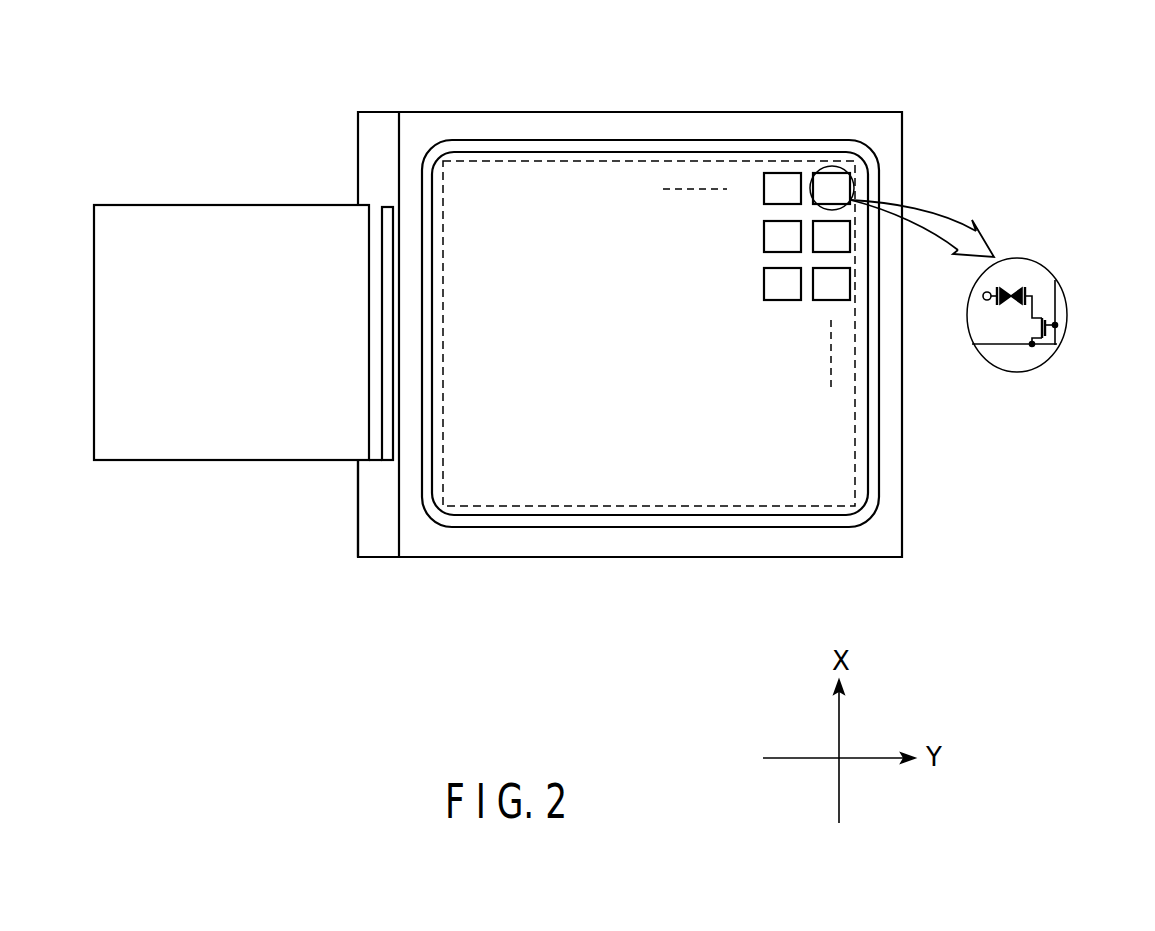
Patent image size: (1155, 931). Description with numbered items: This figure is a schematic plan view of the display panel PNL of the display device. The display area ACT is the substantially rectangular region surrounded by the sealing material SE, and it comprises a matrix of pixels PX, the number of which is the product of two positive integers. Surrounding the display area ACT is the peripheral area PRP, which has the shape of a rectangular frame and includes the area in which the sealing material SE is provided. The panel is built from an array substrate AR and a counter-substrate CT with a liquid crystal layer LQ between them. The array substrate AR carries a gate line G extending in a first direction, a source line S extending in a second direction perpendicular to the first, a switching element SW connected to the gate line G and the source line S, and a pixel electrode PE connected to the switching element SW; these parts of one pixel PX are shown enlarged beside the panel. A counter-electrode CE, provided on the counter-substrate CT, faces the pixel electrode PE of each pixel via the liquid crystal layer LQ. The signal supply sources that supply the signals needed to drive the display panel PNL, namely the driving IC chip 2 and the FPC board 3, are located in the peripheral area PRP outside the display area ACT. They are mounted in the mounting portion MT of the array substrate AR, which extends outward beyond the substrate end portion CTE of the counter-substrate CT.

The display panel PNL is at (347, 96).
The substrate end portion CTE is at (398, 135).
The sealing material SE is at (599, 140).
The pixel PX is at (832, 172).
The peripheral area PRP is at (873, 527).
The display area ACT is at (558, 507).
The FPC board 3 is at (224, 204).
The driving IC chip 2 is at (387, 207).
The mounting portion MT is at (374, 467).
The array substrate AR is at (368, 536).
The counter-substrate CT is at (437, 553).
The counter-electrode CE is at (982, 298).
The liquid crystal layer LQ is at (1010, 286).
The pixel electrode PE is at (1033, 287).
The switching element SW is at (1028, 325).
The gate line G is at (1057, 293).
The source line S is at (1007, 347).